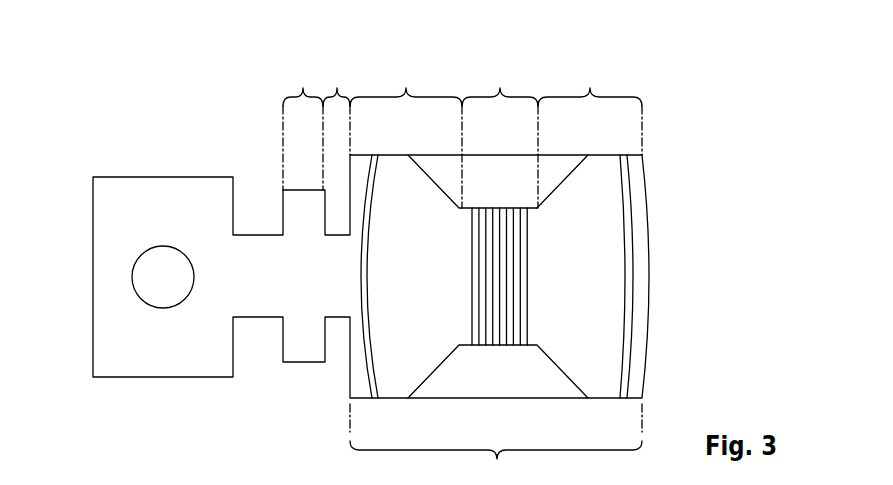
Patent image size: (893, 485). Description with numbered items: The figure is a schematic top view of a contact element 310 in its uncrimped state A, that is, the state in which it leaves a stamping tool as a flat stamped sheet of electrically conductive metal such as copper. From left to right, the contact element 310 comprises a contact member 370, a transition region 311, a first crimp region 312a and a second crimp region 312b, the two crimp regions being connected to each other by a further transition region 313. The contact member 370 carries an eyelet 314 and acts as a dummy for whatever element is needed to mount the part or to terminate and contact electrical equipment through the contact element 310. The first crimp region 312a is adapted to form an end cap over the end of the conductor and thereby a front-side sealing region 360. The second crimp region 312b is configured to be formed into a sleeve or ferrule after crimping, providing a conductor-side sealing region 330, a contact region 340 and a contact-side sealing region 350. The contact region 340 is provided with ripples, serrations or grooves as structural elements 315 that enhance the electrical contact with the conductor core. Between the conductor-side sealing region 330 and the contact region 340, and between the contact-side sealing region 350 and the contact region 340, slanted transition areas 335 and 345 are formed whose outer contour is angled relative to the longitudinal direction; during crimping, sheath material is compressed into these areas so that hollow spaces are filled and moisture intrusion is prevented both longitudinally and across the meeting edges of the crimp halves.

The contact element 310 is at (130, 62).
The contact member 370 is at (133, 188).
The eyelet 314 is at (148, 286).
The transition region 311 is at (268, 234).
The front-side sealing region 360 is at (301, 93).
The first crimp region 312a is at (303, 148).
The further transition region 313 is at (336, 94).
The contact-side sealing region 350 is at (405, 94).
The contact region 340 is at (498, 217).
The conductor-side sealing region 330 is at (589, 94).
The transition area 345 is at (420, 160).
The transition area 335 is at (578, 160).
The structural elements 315 is at (488, 345).
The second crimp region 312b is at (496, 443).
The uncrimped state A is at (688, 158).